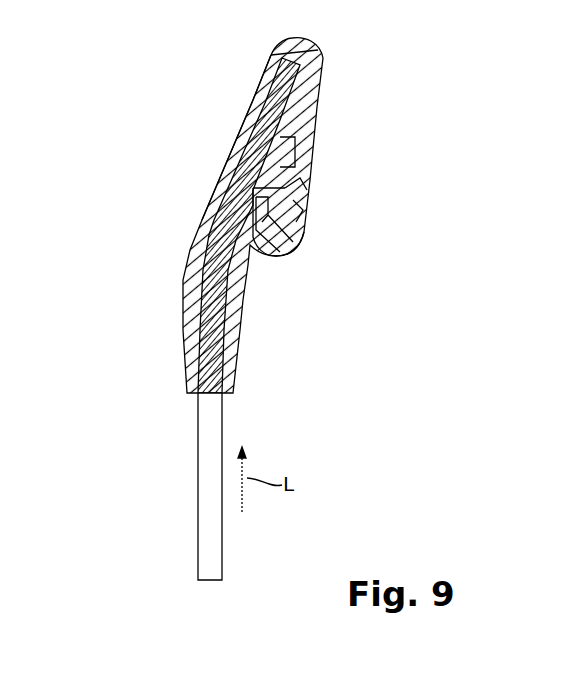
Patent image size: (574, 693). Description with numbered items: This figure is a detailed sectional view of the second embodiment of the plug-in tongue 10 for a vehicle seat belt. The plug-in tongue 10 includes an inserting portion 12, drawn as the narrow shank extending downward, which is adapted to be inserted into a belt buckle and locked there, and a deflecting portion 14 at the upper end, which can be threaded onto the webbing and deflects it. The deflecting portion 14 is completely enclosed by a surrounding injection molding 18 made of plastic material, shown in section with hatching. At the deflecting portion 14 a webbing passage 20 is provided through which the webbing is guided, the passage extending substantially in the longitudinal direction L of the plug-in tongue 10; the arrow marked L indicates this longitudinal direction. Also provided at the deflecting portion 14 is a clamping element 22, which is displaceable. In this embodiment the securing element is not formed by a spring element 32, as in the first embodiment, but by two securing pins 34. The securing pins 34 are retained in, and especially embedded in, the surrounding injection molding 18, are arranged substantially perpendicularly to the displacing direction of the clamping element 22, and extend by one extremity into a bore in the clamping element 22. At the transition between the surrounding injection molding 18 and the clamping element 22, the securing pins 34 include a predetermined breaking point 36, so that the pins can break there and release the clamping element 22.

The plug-in tongue 10 is at (420, 202).
The inserting portion 12 is at (205, 502).
The deflecting portion 14 is at (215, 140).
The surrounding injection molding 18 is at (317, 107).
The webbing passage 20 is at (226, 202).
The clamping element 22 is at (258, 252).
The spring element 32 is at (283, 255).
The securing pins 34 is at (305, 187).
The predetermined breaking point 36 is at (307, 210).